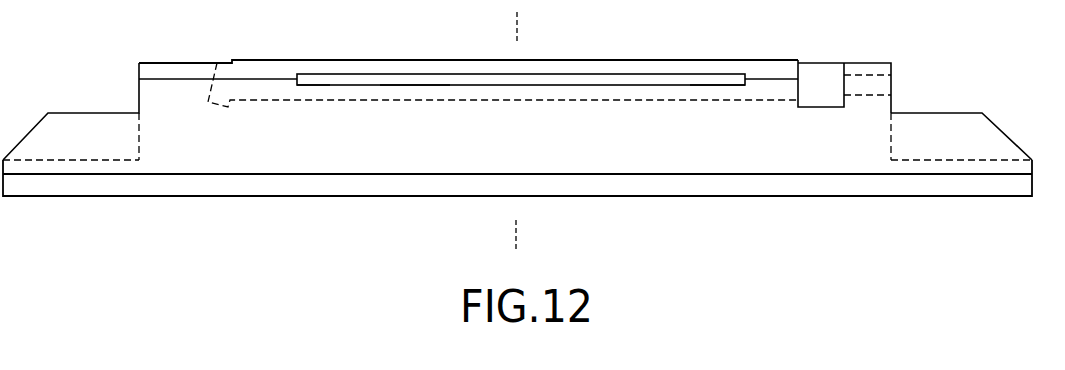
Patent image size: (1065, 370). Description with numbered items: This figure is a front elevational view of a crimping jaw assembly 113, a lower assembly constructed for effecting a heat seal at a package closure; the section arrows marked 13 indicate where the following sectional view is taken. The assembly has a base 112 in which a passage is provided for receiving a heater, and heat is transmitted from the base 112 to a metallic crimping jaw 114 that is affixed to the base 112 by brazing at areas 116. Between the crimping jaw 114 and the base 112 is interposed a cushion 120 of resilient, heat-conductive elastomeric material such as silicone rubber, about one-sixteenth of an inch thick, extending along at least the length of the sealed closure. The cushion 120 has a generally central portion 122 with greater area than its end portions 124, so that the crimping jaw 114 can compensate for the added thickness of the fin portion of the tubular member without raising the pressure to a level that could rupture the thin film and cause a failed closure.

The base 112 is at (148, 167).
The crimping jaw assembly 113 is at (217, 196).
The crimping jaw 114 is at (673, 68).
The brazing areas 116 is at (252, 77).
The cushion 120 is at (415, 85).
The central portion 122 is at (514, 78).
The end portions 124 is at (312, 86).
The section line for FIG. 13 is at (473, 19).